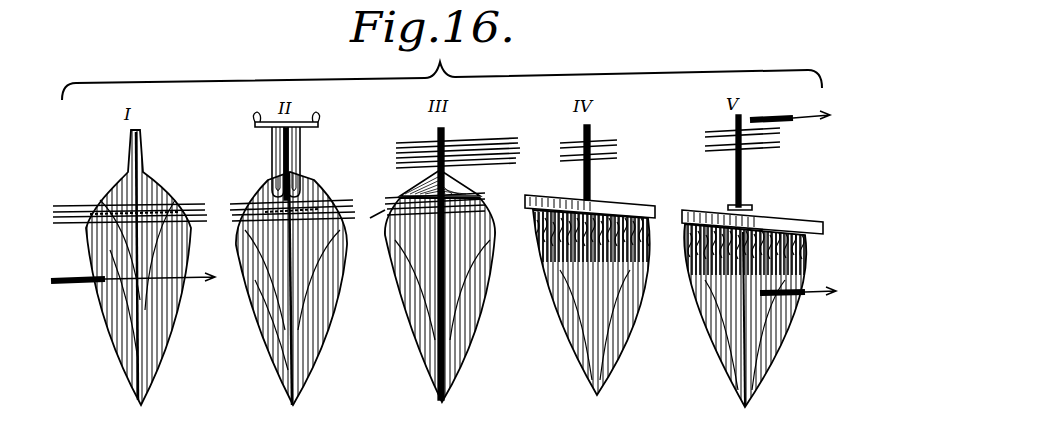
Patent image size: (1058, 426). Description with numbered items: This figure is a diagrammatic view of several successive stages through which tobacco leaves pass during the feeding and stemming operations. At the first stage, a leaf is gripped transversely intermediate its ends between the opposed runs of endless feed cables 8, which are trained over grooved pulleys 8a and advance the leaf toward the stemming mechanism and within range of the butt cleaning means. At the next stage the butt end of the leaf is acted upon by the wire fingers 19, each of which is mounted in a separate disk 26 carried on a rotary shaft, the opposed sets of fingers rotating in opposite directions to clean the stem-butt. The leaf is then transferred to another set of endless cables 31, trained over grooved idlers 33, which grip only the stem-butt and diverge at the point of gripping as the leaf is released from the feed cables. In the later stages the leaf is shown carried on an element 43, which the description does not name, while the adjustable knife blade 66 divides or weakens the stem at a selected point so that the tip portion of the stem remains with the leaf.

The endless feed cables 8 is at (205, 205).
The grooved pulleys 8a is at (472, 196).
The wire fingers 19 is at (273, 143).
The disk 26 is at (318, 116).
The upper endless cables 31 is at (502, 140).
The grooved idlers 33 is at (405, 142).
The board 43 is at (605, 203).
The knife blade 66 is at (752, 207).